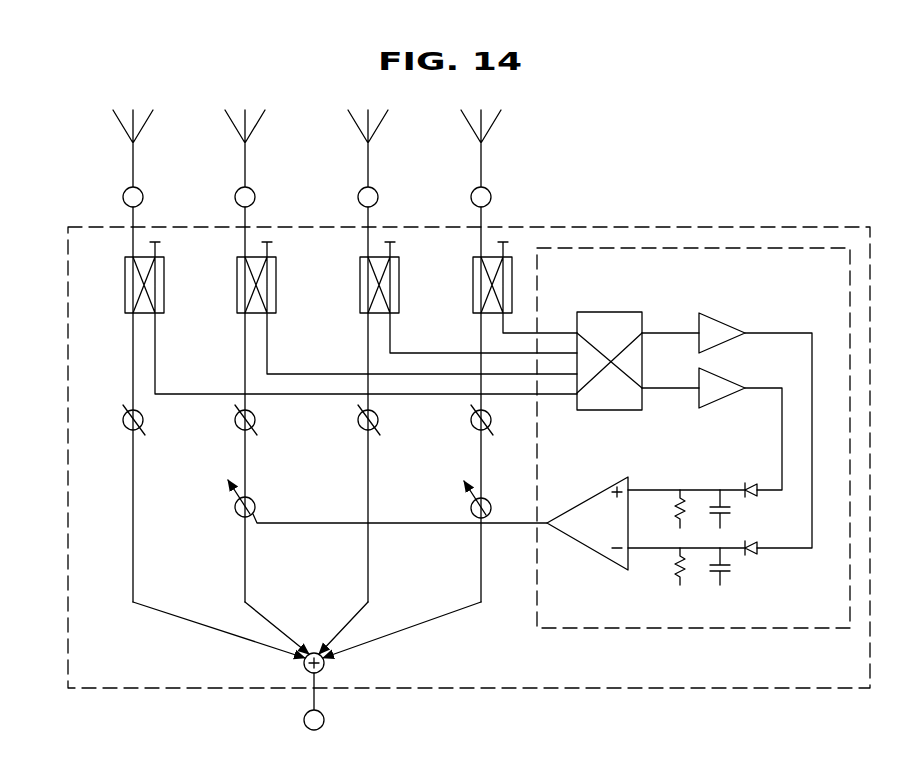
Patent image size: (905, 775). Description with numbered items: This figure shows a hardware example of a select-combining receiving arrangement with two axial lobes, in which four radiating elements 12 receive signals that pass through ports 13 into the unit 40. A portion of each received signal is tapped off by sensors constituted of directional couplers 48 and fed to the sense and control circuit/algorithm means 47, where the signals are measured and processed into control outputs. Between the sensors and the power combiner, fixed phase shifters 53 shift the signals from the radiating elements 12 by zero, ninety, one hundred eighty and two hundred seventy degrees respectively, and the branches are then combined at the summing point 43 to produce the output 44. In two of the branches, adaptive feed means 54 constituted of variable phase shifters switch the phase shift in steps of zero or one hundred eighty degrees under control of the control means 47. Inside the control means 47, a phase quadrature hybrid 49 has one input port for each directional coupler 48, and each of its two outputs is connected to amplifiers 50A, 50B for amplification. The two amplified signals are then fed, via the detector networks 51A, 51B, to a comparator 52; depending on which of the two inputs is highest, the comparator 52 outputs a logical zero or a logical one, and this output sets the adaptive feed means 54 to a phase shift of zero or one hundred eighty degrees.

The radiating elements 12 is at (466, 118).
The antenna ports 13 is at (143, 197).
The receiver unit 40 is at (632, 227).
The summer / combiner 43 is at (326, 666).
The output port 44 is at (325, 721).
The sense and control circuit/algorithm means 47 is at (707, 260).
The directional couplers 48 is at (473, 278).
The phase quadrature hybrid 49 is at (618, 323).
The amplifier 50A is at (723, 322).
The amplifier 50B is at (728, 381).
The detector (diode, resistor, capacitor) 51A is at (733, 550).
The detector (diode, resistor, capacitor) 51B is at (692, 490).
The comparator 52 is at (585, 544).
The fixed phase shifters 53 is at (474, 428).
The adaptive feed means 54 is at (517, 493).